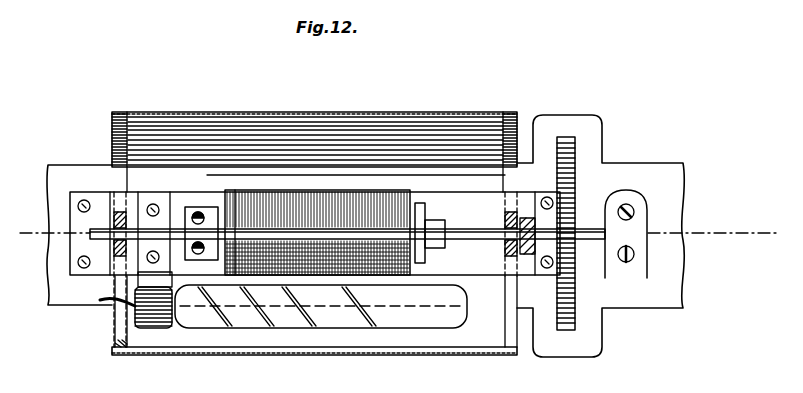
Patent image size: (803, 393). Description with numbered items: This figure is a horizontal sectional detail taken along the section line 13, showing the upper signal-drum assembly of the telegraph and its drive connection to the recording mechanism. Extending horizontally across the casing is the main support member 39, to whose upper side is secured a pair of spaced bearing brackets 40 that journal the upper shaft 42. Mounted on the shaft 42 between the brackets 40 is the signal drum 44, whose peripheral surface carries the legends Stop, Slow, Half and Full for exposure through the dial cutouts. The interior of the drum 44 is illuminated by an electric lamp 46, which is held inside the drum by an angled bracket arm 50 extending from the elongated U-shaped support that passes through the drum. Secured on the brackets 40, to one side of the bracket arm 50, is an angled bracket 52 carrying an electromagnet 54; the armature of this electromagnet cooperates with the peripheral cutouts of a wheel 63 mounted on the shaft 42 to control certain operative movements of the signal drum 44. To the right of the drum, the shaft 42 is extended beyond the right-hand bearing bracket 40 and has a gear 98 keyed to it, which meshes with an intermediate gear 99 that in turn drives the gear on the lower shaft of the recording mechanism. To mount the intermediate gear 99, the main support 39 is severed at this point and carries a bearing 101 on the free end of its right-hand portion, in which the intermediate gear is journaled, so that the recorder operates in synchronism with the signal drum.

The section line 13 is at (25, 218).
The main support member 39 is at (668, 255).
The bearing brackets 40 is at (118, 242).
The upper shaft 42 is at (472, 240).
The signal drum 44 is at (347, 111).
The electric lamp 46 is at (293, 322).
The angled bracket arm 50 is at (158, 325).
The angled bracket 52 is at (208, 215).
The electromagnet 54 is at (345, 198).
The wheel 63 is at (427, 215).
The gear 98 is at (560, 262).
The intermediate gear 99 is at (575, 159).
The bearing 101 is at (636, 222).